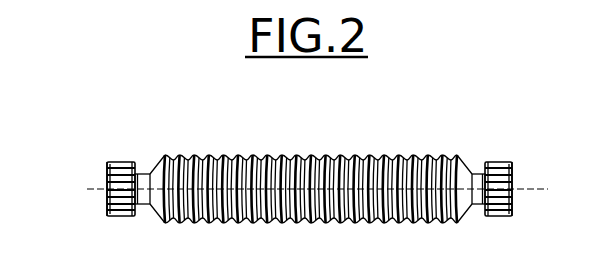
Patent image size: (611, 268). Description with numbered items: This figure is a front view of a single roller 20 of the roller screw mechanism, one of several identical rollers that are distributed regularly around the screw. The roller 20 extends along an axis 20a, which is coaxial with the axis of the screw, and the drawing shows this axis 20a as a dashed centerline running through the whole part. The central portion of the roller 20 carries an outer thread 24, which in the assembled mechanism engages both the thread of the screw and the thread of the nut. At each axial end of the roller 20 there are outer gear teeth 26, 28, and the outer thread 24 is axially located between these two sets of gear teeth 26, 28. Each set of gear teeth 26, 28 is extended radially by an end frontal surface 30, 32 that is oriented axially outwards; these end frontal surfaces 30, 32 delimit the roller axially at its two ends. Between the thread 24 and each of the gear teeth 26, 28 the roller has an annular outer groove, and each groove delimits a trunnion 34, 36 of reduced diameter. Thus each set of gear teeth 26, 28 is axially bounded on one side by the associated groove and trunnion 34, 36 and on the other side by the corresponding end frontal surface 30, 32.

The roller 20 is at (363, 133).
The axis 20a is at (543, 187).
The outer thread 24 is at (312, 225).
The outer gear teeth 26 is at (118, 217).
The outer gear teeth 28 is at (500, 217).
The end frontal surface 30 is at (108, 172).
The end frontal surface 32 is at (513, 205).
The trunnion 34 is at (140, 173).
The trunnion 36 is at (479, 173).